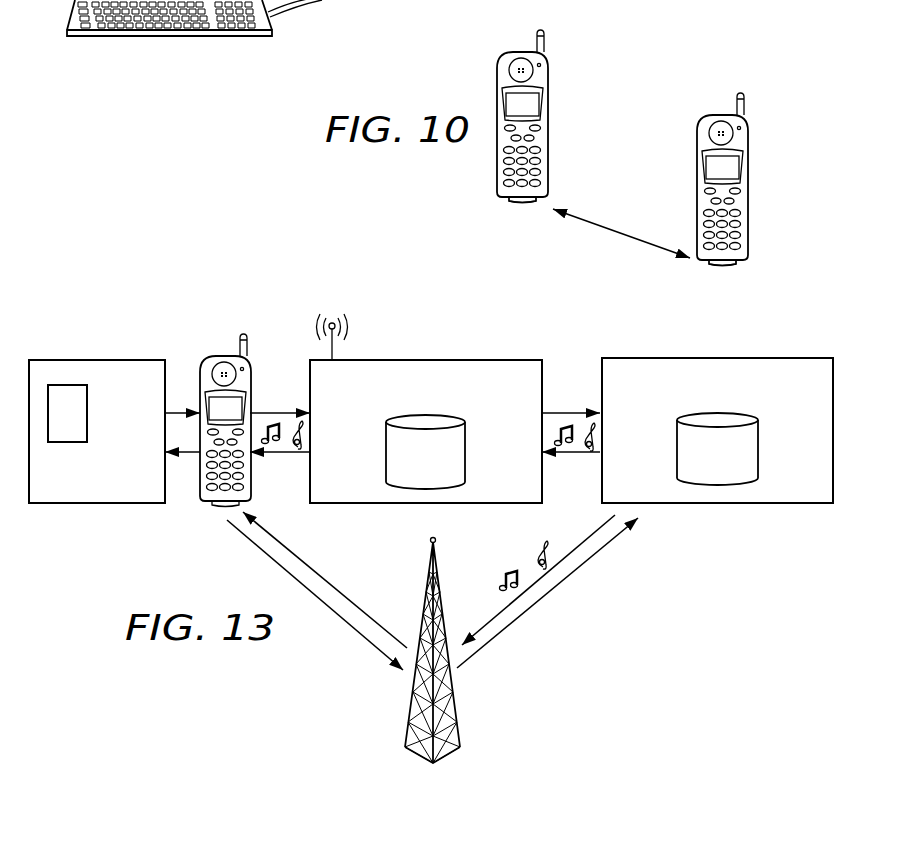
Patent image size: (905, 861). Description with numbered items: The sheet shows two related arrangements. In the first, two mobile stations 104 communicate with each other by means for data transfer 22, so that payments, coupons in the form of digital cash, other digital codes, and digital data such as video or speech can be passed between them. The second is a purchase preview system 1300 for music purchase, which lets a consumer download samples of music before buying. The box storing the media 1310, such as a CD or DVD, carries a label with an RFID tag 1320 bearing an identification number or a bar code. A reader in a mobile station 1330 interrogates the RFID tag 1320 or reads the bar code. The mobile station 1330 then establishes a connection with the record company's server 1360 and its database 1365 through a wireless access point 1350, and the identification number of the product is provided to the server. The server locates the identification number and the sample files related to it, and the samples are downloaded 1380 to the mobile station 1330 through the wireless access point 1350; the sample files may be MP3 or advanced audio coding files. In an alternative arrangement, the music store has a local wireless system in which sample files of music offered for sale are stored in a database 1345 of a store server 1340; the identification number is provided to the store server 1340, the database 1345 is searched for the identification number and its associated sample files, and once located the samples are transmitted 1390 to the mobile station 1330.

In FIG. 10, the mobile station 104 is at (526, 52).
In FIG. 10, the means for data transfer 22 is at (522, 201).
In FIG. 13, the music distribution system 1300 is at (124, 304).
In FIG. 13, the box storing the media 1310 is at (97, 505).
In FIG. 13, the RFID tag 1320 is at (87, 414).
In FIG. 13, the mobile station 1330 is at (222, 357).
In FIG. 13, the store server 1340 is at (478, 505).
In FIG. 13, the database 1345 is at (466, 450).
In FIG. 13, the wireless access point 1350 is at (410, 712).
In FIG. 13, the record company's server 1360 is at (717, 505).
In FIG. 13, the database 1365 is at (758, 447).
In FIG. 13, the samples downloaded 1380 is at (327, 572).
In FIG. 13, the music data transfer 1390 is at (564, 456).